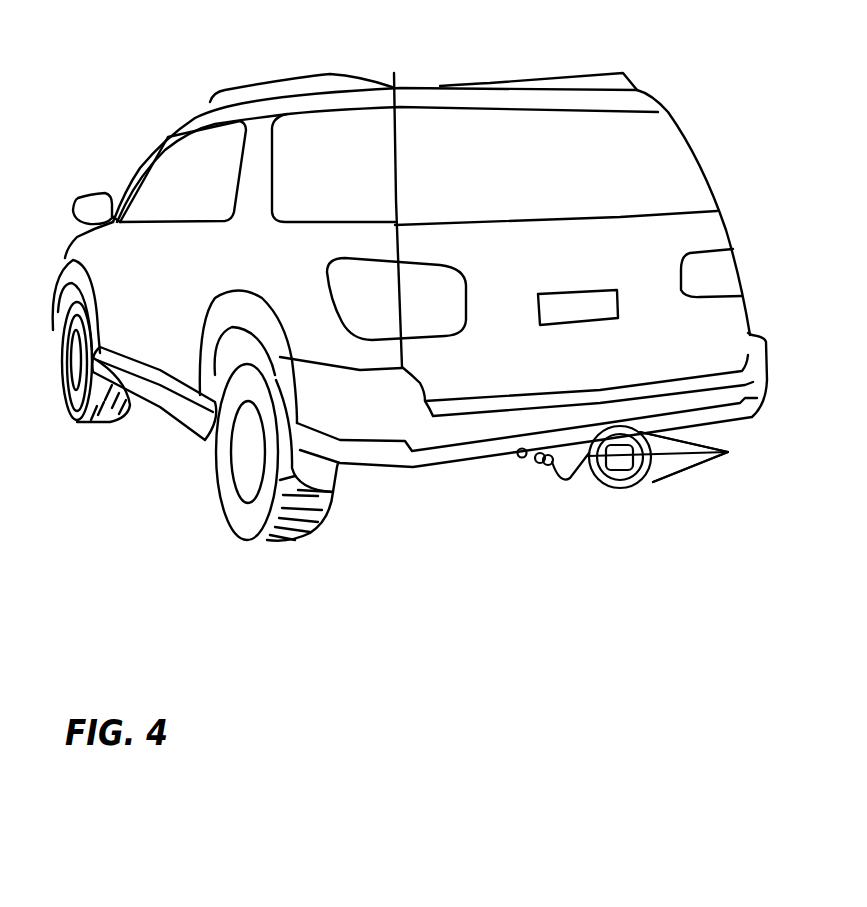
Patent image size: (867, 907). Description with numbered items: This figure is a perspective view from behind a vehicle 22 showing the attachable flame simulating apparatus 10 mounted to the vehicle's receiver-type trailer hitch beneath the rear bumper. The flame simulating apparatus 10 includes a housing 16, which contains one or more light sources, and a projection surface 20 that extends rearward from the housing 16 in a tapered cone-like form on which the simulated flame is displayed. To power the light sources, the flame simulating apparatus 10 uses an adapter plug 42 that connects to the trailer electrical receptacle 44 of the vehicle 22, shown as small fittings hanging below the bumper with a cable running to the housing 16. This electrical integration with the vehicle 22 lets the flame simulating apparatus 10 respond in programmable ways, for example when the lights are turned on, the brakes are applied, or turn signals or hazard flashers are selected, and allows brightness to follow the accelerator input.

The vehicle 22 is at (478, 124).
The attachable flame simulating apparatus 10 is at (663, 437).
The projection surface 20 is at (677, 463).
The housing 16 is at (593, 480).
The trailer electrical receptacle 44 is at (517, 458).
The adapter plug 42 is at (542, 465).